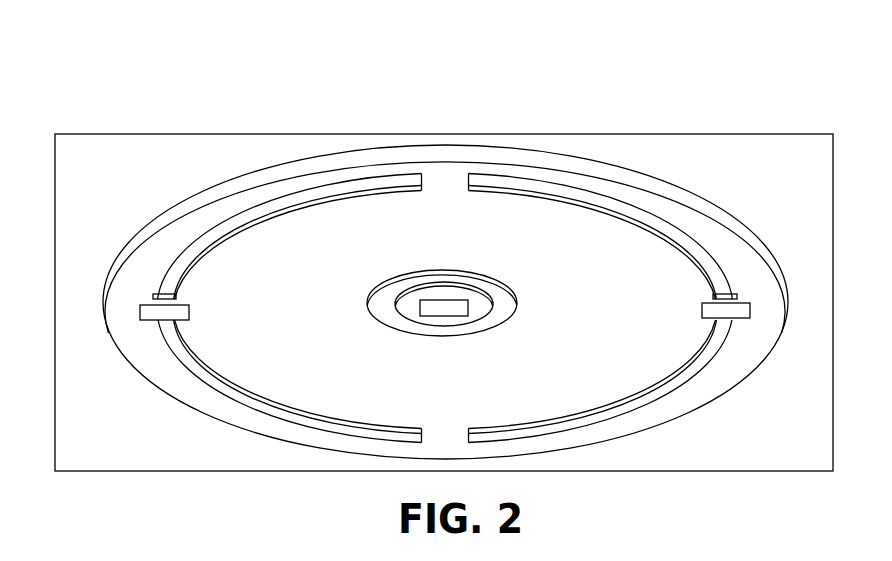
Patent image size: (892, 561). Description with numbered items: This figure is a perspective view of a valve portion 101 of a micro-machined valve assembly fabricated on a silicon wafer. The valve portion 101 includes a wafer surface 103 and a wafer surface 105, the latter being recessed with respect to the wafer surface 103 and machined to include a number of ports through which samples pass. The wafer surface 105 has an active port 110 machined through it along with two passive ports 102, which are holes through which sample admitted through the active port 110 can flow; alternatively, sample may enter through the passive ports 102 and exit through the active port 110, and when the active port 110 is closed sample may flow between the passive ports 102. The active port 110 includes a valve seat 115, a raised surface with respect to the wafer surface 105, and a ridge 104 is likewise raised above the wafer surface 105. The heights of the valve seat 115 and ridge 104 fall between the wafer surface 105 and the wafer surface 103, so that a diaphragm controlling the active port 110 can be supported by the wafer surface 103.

The valve portion 101 is at (133, 103).
The passive ports 102 is at (190, 310).
The wafer surface 103 is at (125, 180).
The ridge 104 is at (612, 210).
The wafer surface 105 is at (307, 182).
The active port 110 is at (435, 316).
The valve seat 115 is at (518, 300).